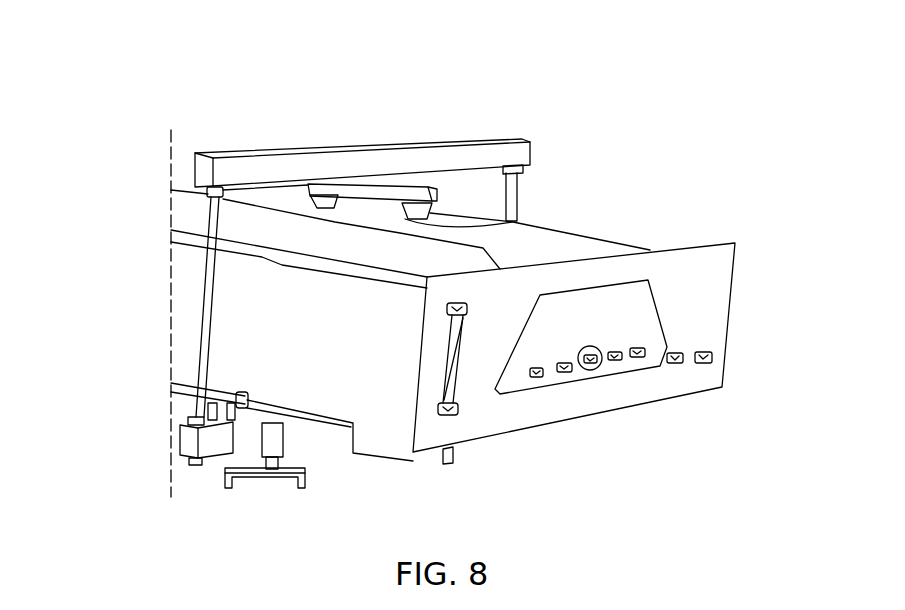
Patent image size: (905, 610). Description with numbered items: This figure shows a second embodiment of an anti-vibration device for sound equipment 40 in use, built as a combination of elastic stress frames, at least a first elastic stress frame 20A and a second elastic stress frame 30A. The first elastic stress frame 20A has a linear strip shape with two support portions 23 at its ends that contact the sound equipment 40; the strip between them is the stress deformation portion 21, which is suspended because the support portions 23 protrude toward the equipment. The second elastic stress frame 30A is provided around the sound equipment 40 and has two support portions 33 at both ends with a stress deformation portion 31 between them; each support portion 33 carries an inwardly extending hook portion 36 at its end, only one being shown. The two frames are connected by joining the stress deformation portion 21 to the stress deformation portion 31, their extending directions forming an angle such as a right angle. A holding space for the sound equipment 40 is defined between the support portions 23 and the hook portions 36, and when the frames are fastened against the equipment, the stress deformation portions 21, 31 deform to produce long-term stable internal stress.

The first elastic stress frame 20A is at (378, 214).
The second elastic stress frame 30A is at (338, 104).
The stress deformation portion 31 is at (452, 160).
The support portion 33 is at (210, 282).
The stress deformation portion 21 is at (357, 190).
The support portion 23 is at (324, 210).
The sound equipment 40 is at (682, 327).
The hook portion 36 is at (212, 442).